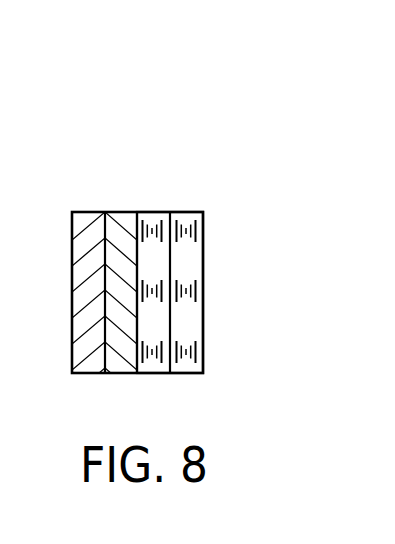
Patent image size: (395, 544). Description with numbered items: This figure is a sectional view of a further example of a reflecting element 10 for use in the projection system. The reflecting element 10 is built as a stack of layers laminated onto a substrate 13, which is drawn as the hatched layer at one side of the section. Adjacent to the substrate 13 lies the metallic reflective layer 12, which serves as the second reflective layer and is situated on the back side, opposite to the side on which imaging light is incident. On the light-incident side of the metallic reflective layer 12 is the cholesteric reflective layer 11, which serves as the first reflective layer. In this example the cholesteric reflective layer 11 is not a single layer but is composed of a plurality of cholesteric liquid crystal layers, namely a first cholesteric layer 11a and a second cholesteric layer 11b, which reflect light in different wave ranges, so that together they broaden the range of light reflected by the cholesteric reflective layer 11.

The reflecting element 10 is at (209, 84).
The cholesteric reflective layer 11 is at (245, 152).
The first cholesteric layer 11a is at (158, 212).
The second cholesteric layer 11b is at (192, 212).
The metallic reflective layer 12 is at (123, 212).
The substrate 13 is at (90, 212).